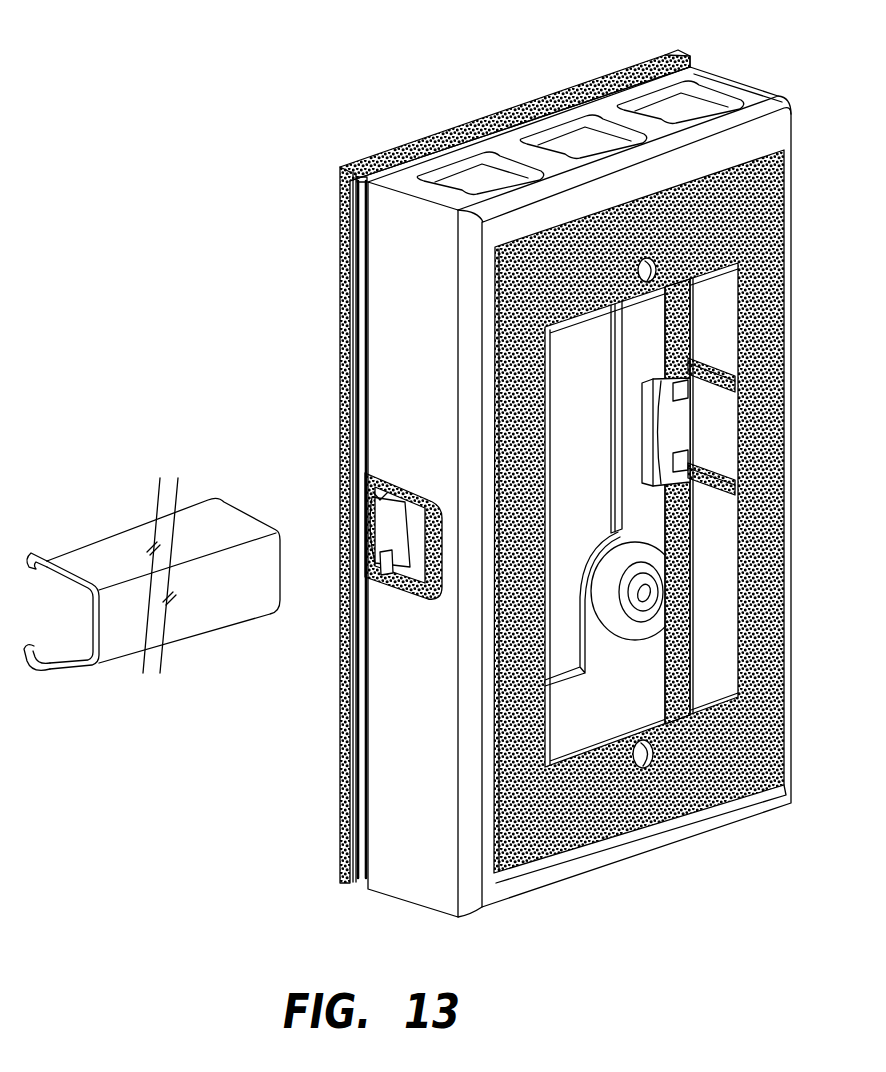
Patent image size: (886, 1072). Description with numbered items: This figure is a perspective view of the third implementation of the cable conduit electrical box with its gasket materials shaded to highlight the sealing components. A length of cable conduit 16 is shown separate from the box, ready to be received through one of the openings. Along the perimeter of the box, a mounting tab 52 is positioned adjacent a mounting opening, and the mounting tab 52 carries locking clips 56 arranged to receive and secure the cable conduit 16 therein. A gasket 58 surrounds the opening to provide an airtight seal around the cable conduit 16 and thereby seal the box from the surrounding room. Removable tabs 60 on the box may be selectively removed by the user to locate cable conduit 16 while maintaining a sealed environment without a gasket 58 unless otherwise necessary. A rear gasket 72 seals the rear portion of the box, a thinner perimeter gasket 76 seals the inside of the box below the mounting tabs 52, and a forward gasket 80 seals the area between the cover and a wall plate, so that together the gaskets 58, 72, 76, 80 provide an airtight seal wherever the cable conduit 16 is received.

The cable conduit 16 is at (148, 515).
The mounting tab 52 is at (643, 383).
The locking clip 56 is at (680, 453).
The gasket 58 is at (420, 530).
The removable tab 60 is at (470, 150).
The rear gasket 72 is at (355, 165).
The perimeter gasket 76 is at (665, 683).
The forward gasket 80 is at (522, 872).